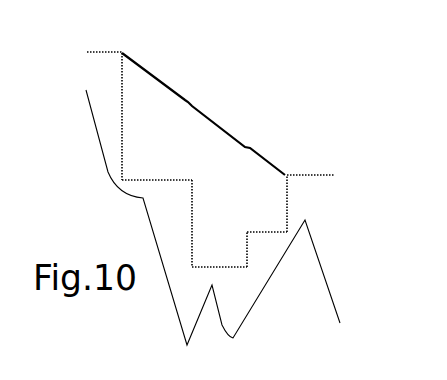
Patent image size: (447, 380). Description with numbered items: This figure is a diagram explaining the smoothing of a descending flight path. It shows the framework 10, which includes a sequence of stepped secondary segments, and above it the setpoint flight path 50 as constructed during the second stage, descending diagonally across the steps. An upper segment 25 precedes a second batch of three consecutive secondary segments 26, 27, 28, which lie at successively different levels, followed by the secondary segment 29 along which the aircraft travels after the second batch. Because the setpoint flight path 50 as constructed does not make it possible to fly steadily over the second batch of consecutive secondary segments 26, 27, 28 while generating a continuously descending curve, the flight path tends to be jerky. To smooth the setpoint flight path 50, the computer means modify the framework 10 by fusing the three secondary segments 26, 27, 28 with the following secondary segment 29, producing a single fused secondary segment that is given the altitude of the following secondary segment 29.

The framework 10 is at (193, 172).
The top surface 25 is at (102, 51).
The secondary segment 26 is at (160, 179).
The secondary segment 27 is at (233, 266).
The secondary segment 28 is at (272, 231).
The following secondary segment 29 is at (325, 178).
The setpoint flight path 50 is at (224, 127).